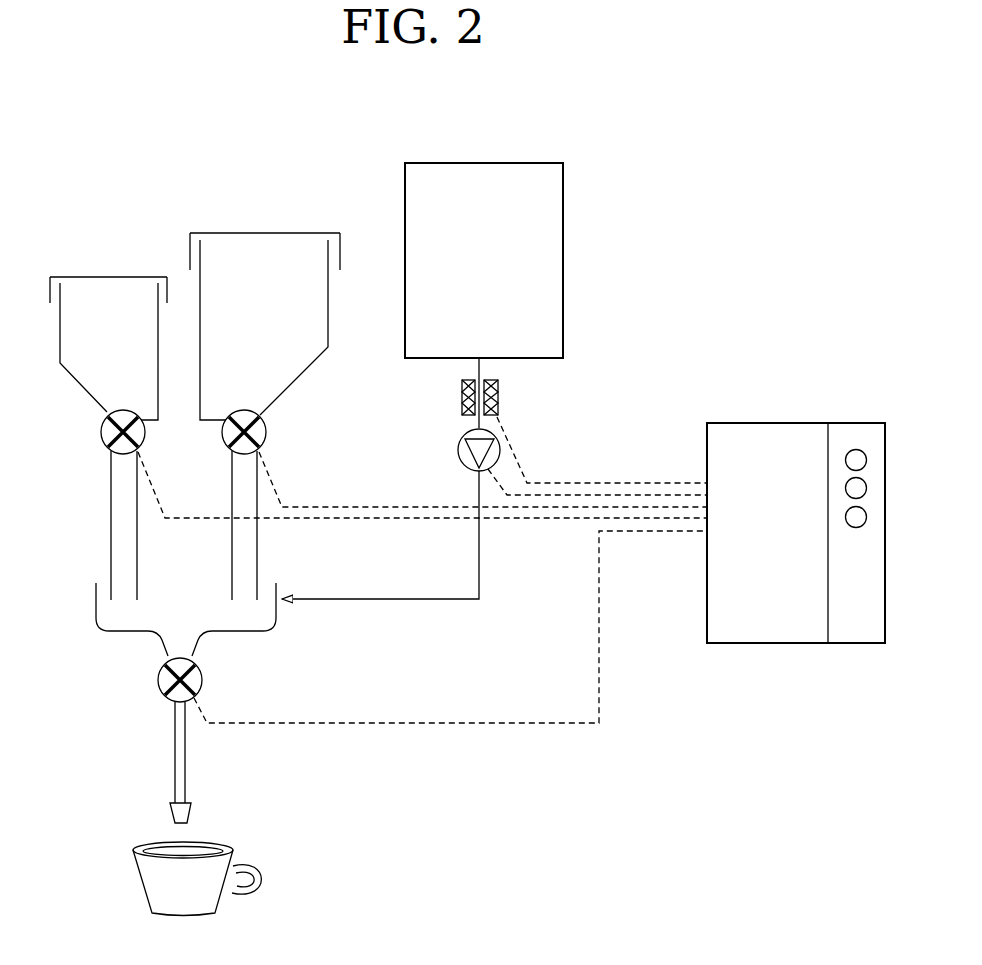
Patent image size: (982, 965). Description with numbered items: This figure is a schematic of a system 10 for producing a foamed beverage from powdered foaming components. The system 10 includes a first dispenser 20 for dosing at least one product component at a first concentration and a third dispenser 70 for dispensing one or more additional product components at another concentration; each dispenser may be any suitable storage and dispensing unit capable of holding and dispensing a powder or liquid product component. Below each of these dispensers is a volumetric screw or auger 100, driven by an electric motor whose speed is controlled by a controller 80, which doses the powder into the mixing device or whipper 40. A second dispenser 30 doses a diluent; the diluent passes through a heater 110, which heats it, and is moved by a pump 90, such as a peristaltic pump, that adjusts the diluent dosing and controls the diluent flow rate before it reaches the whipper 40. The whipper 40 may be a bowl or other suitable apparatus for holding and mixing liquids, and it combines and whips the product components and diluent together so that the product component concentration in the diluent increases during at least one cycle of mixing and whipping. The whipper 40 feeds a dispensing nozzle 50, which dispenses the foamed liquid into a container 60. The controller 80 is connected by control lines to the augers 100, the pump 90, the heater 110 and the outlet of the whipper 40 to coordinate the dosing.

The system 10 is at (670, 168).
The first dispenser 20 is at (267, 232).
The second dispenser 30 is at (487, 162).
The mixing device or whipper 40 is at (97, 630).
The dispensing nozzle 50 is at (173, 752).
The container 60 is at (137, 880).
The third dispenser 70 is at (107, 272).
The controller 80 is at (792, 422).
The pump 90 is at (455, 448).
The volumetric screw or auger 100 is at (103, 447).
The heater 110 is at (500, 400).